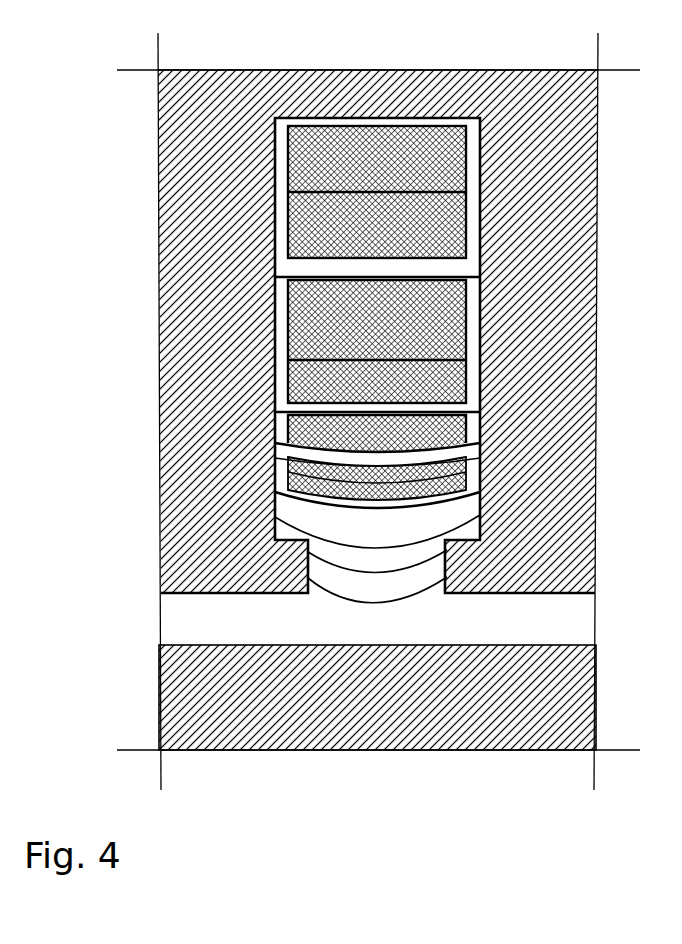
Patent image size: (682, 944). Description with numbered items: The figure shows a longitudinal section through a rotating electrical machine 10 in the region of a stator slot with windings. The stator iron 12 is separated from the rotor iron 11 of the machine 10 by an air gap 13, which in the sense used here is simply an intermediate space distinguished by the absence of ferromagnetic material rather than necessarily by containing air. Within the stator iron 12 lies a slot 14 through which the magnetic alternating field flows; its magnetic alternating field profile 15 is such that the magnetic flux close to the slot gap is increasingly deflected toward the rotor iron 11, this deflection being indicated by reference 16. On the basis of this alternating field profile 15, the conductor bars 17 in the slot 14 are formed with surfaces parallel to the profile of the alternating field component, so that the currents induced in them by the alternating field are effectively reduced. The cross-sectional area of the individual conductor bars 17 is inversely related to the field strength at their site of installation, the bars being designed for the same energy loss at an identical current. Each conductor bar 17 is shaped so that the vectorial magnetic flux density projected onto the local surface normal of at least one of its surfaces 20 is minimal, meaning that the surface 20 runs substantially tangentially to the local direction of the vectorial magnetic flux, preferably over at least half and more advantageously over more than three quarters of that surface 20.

The rotating electrical machine 10 is at (118, 96).
The rotor iron 11 is at (199, 667).
The stator iron 12 is at (208, 582).
The air gap 13 is at (556, 622).
The slot 14 is at (323, 612).
The magnetic alternating field profile 15 is at (397, 157).
The deflection of magnetic flux toward rotor iron 16 is at (427, 583).
The conductor bar 17 is at (298, 465).
The surface of conductor bar 20 is at (433, 490).